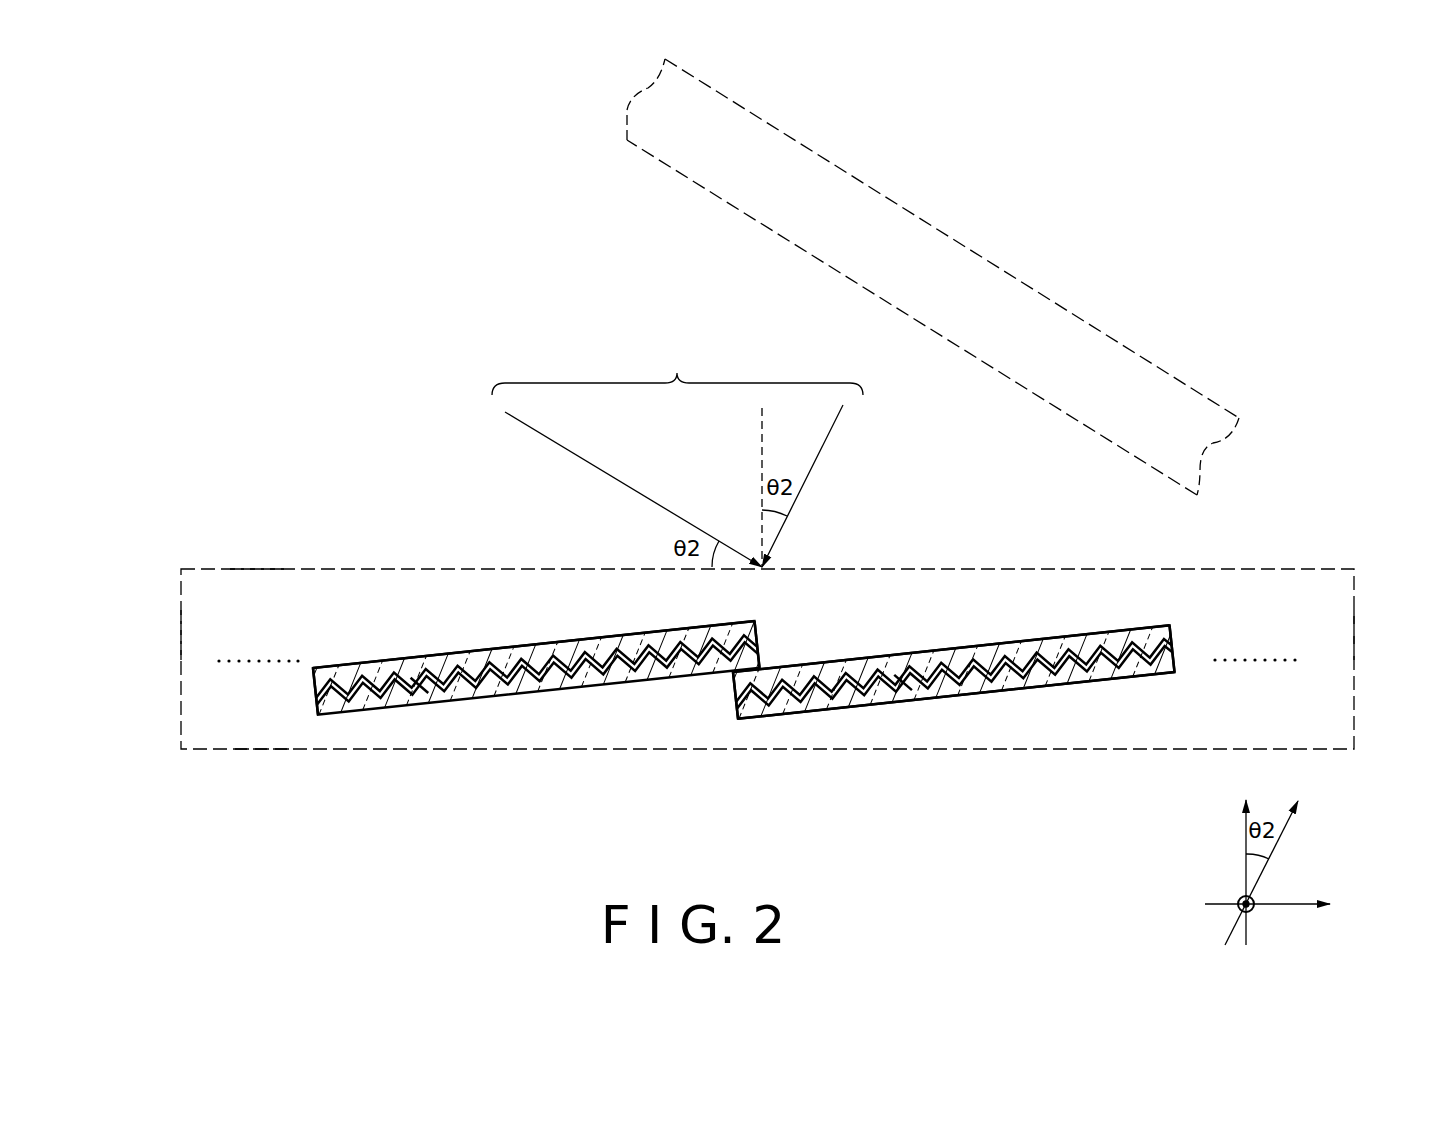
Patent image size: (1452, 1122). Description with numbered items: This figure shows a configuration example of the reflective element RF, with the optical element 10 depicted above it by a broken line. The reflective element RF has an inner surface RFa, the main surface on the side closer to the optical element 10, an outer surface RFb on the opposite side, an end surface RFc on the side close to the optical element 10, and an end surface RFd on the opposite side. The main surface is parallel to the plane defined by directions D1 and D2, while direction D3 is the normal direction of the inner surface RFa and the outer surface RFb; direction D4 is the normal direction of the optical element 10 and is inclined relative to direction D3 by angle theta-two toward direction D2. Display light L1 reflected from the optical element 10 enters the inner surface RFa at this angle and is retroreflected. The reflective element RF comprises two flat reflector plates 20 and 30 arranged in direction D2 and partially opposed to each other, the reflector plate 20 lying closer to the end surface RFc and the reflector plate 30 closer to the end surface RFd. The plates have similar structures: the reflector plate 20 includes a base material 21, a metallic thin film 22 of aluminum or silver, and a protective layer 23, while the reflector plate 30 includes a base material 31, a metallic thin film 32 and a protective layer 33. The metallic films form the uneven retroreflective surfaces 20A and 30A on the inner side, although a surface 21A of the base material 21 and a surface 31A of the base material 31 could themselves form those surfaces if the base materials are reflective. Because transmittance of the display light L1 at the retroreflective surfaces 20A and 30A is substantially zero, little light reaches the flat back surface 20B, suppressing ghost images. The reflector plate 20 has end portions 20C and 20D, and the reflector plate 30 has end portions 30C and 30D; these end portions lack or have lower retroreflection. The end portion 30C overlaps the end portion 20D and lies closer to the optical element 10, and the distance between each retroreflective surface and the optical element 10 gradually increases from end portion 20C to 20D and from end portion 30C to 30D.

The optical element 10 is at (1122, 345).
The reflector plate 20 is at (963, 716).
The retroreflective surface 20A is at (930, 662).
The back surface 20B is at (991, 699).
The end portion 20C is at (1184, 650).
The end portion 20D is at (730, 707).
The base material 21 is at (1027, 658).
The surface of base material 21A is at (903, 667).
The metallic thin film 22 is at (1080, 647).
The protective layer 23 is at (1130, 642).
The reflector plate 30 is at (526, 712).
The retroreflective surface 30A is at (449, 667).
The end portion 30C is at (768, 644).
The end portion 30D is at (312, 705).
The base material 31 is at (614, 652).
The surface of base material 31A is at (418, 672).
The metallic thin film 32 is at (640, 642).
The protective layer 33 is at (668, 642).
The reflective element RF is at (1340, 533).
The inner surface RFa is at (256, 566).
The outer surface RFb is at (262, 752).
The end surface RFc is at (1357, 635).
The end surface RFd is at (178, 636).
The display light L1 is at (677, 370).
The direction D1 is at (1229, 892).
The direction D2 is at (1286, 905).
The direction D3 is at (1248, 855).
The direction D4 is at (1271, 859).